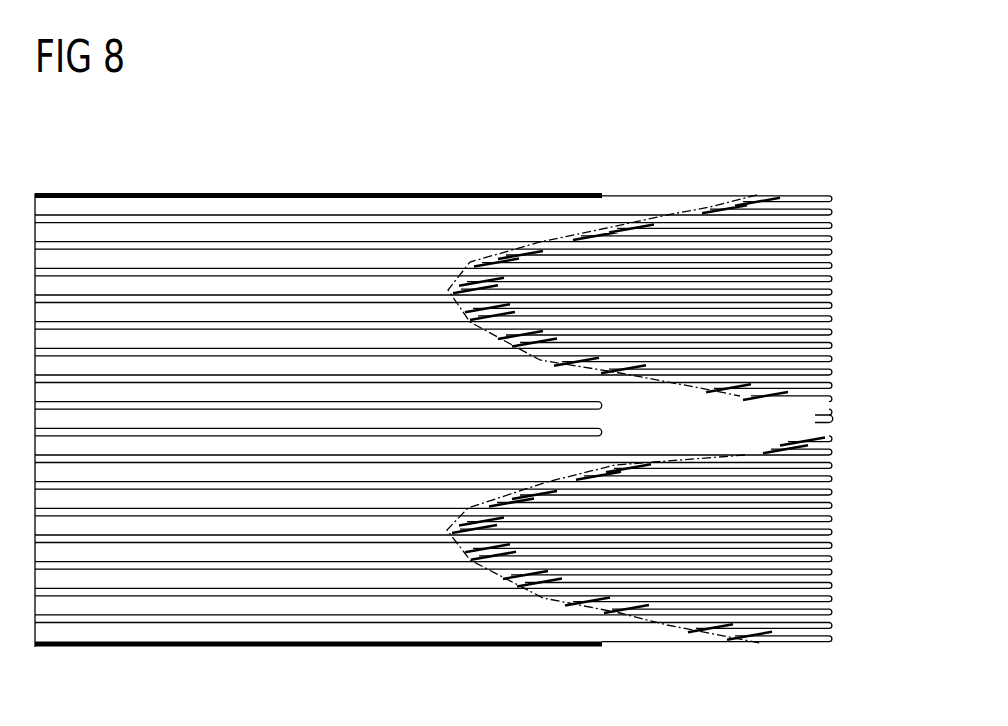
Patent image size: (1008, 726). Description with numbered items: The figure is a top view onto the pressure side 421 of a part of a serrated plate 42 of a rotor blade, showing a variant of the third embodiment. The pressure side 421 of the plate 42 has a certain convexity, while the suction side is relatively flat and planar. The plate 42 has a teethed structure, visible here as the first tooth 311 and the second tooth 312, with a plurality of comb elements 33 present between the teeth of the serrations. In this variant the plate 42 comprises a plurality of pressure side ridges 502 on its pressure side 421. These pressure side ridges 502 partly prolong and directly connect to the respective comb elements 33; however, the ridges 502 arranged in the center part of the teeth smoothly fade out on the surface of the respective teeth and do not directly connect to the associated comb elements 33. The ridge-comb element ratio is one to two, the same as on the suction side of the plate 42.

The serrated plate 42 is at (541, 152).
The comb elements 33 is at (830, 525).
The first tooth 311 is at (543, 605).
The second tooth 312 is at (737, 424).
The pressure side 421 is at (123, 473).
The pressure side ridges 502 is at (205, 540).